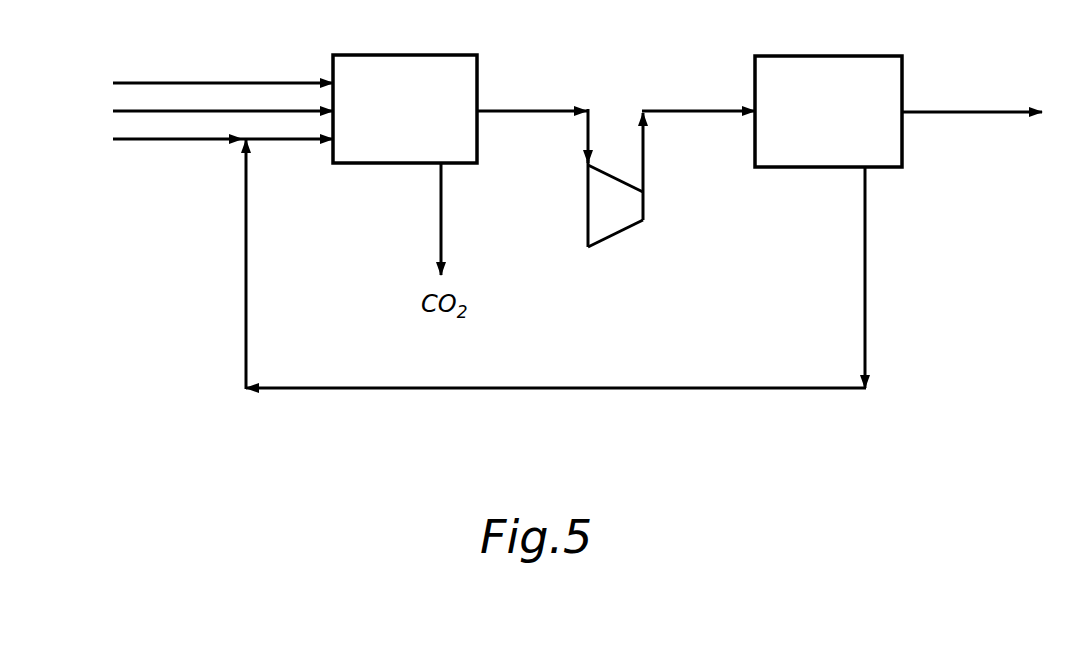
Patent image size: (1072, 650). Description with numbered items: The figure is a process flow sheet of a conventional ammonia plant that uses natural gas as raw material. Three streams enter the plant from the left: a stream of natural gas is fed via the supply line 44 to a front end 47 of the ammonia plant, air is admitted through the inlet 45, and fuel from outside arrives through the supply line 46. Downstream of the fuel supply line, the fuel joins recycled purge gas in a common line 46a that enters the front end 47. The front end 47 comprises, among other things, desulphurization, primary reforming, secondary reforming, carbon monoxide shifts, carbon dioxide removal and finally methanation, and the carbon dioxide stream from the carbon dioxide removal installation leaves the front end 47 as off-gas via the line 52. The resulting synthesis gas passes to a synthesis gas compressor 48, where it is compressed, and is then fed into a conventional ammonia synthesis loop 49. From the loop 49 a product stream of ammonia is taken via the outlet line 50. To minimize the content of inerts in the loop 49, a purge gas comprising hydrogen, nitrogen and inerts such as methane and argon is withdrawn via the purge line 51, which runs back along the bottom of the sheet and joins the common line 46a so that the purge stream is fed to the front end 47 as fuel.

The supply line for raw material 44 is at (280, 72).
The inlet for air 45 is at (195, 110).
The supply line for fuel 46 is at (150, 145).
The common line for fuel and recycled purge gas 46a is at (268, 142).
The front end of ammonia plant 47 is at (414, 127).
The synthesis gas compressor 48 is at (623, 233).
The ammonia loop 49 is at (838, 123).
The outlet line for ammonia produced 50 is at (987, 97).
The purge line from the loop 51 is at (577, 366).
The line for off-gas (CO2) from the front end 52 is at (442, 222).